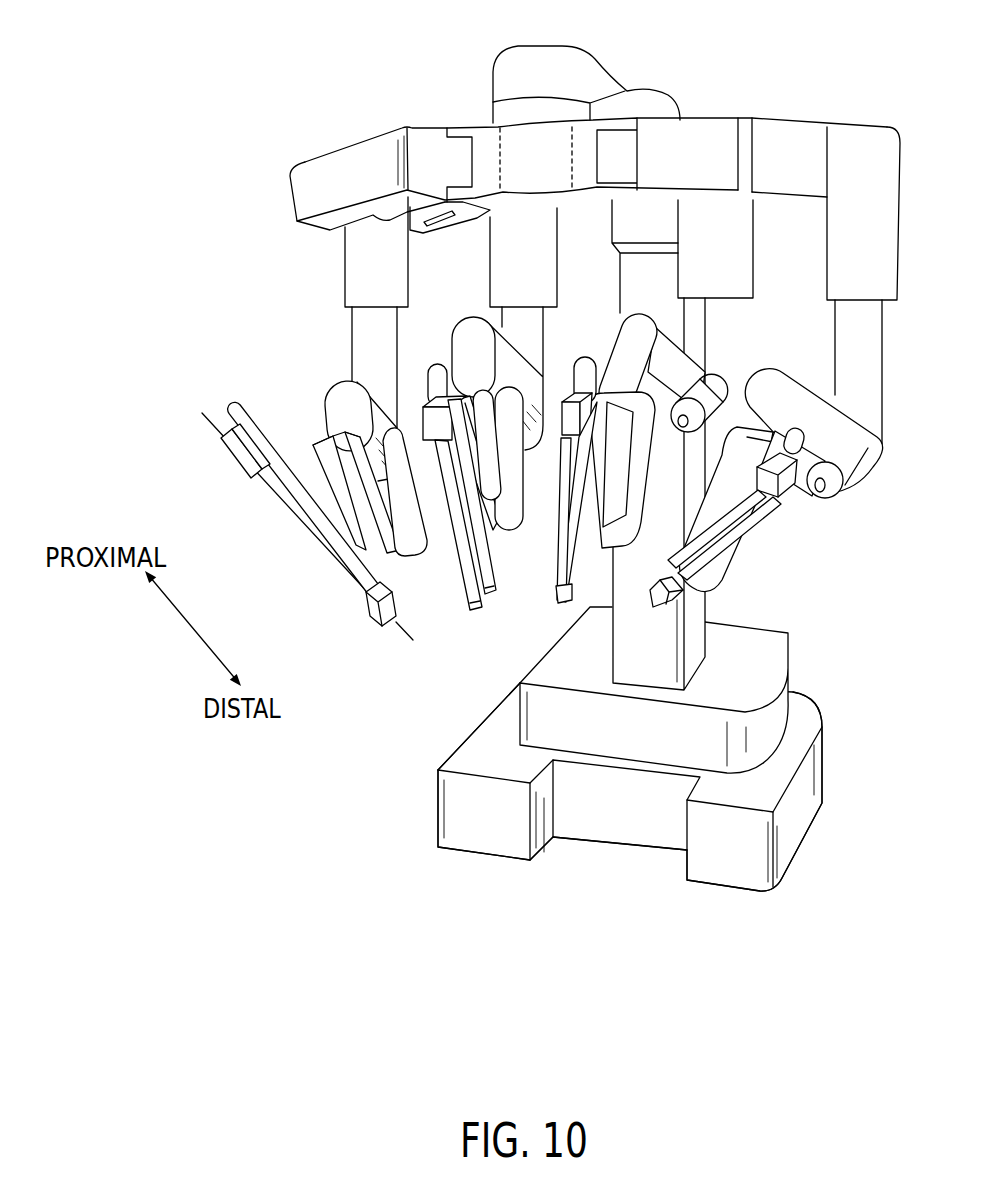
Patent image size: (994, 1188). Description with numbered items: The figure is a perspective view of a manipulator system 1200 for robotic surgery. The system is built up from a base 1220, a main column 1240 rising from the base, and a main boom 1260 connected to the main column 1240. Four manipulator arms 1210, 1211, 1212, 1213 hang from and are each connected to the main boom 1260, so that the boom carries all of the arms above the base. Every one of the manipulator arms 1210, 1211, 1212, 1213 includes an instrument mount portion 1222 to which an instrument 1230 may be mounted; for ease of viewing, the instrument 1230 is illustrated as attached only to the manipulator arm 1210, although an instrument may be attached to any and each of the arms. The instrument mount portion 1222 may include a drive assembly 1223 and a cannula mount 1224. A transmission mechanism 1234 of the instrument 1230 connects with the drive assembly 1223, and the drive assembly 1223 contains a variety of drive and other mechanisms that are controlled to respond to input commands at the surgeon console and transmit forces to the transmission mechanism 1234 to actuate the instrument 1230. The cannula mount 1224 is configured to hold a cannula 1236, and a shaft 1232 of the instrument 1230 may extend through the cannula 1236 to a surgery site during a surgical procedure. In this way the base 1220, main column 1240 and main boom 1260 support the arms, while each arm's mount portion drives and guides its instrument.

The manipulator system 1200 is at (318, 102).
The main boom 1260 is at (637, 100).
The manipulator arm 1210 is at (322, 356).
The manipulator arm 1211 is at (448, 331).
The manipulator arm 1212 is at (586, 345).
The manipulator arm 1213 is at (781, 357).
The base 1220 is at (765, 640).
The main column 1240 is at (630, 663).
The instrument mount portion 1222 is at (289, 532).
The drive assembly 1223 is at (236, 468).
The cannula mount 1224 is at (378, 614).
The instrument 1230 is at (330, 580).
The shaft 1232 is at (302, 530).
The transmission mechanism 1234 is at (220, 440).
The cannula 1236 is at (440, 594).